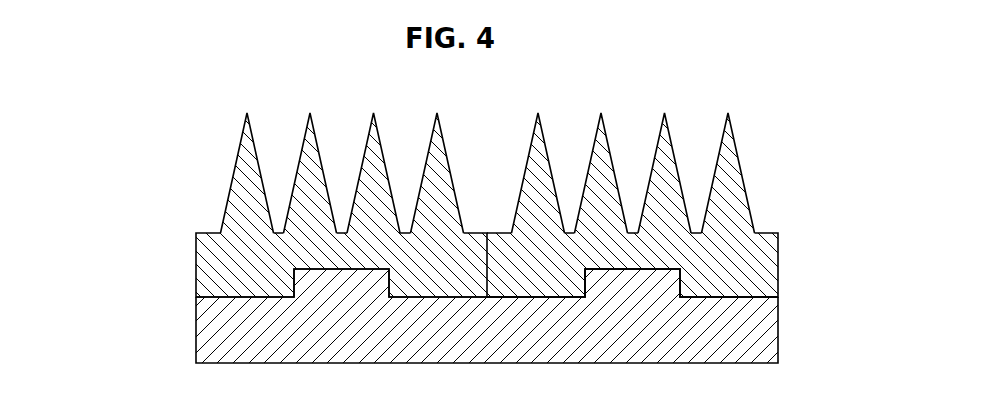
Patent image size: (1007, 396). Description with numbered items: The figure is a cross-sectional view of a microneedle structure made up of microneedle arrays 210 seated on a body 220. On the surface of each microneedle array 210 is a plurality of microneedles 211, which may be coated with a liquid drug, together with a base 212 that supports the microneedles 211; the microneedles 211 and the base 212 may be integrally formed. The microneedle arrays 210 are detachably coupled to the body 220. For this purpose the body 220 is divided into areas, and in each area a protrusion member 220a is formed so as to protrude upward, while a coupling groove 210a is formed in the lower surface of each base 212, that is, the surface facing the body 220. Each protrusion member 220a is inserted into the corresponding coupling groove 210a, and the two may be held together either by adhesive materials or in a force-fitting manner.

The microneedle array 210 is at (404, 205).
The microneedles 211 is at (242, 180).
The base 212 is at (441, 265).
The coupling groove 210a is at (667, 288).
The body 220 is at (534, 300).
The protrusion member 220a is at (680, 283).